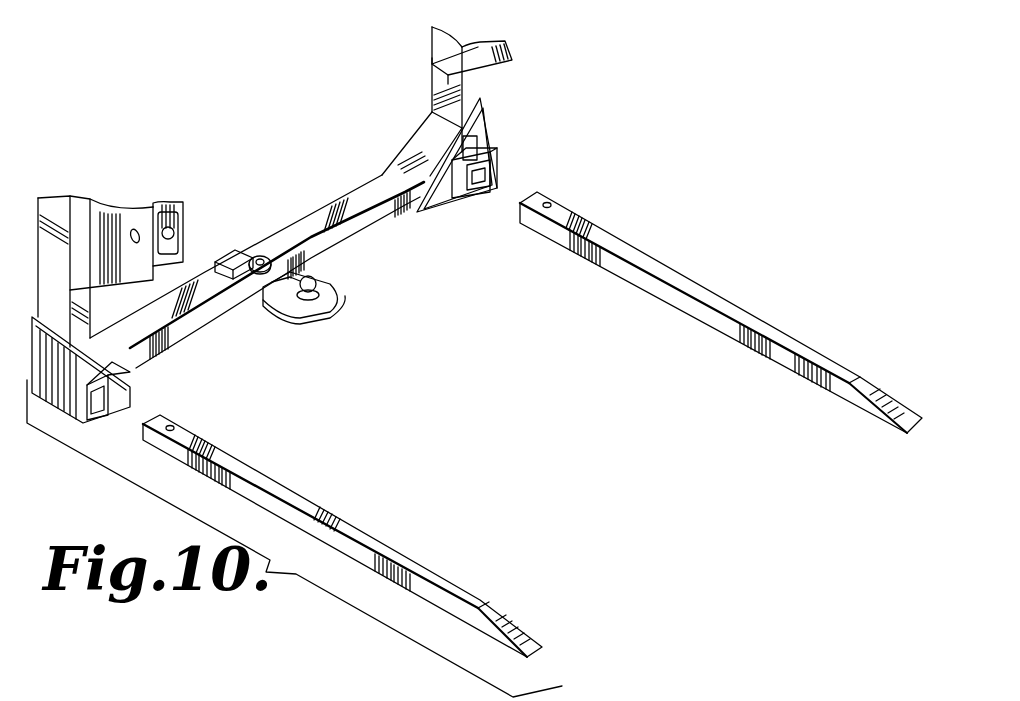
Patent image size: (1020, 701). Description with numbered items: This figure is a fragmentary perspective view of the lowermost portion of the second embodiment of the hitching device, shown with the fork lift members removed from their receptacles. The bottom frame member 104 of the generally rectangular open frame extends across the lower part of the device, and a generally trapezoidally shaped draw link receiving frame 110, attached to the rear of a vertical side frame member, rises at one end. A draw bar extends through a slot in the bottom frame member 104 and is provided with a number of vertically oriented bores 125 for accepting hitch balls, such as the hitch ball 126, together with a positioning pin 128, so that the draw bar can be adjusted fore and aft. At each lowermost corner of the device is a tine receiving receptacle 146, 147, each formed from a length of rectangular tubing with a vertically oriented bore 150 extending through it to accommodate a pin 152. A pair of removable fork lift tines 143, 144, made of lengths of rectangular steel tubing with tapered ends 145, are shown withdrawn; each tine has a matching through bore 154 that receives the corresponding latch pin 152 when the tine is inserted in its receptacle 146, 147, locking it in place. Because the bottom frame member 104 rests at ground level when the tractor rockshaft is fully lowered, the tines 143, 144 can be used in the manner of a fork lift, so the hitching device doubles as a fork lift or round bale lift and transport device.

The bottom frame member 104 is at (367, 200).
The draw link receiving frame 110 is at (130, 222).
The vertically oriented bore 125 is at (277, 298).
The hitch ball 126 is at (327, 307).
The positioning pin 128 is at (263, 254).
The fork lift tine 143 is at (353, 537).
The fork lift tine 144 is at (690, 303).
The tapered end 145 is at (527, 637).
The tine receiving receptacle 146 is at (107, 413).
The tine receiving receptacle 147 is at (478, 198).
The vertically oriented bore 150 is at (447, 208).
The pin 152 is at (130, 363).
The through bore 154 is at (176, 428).